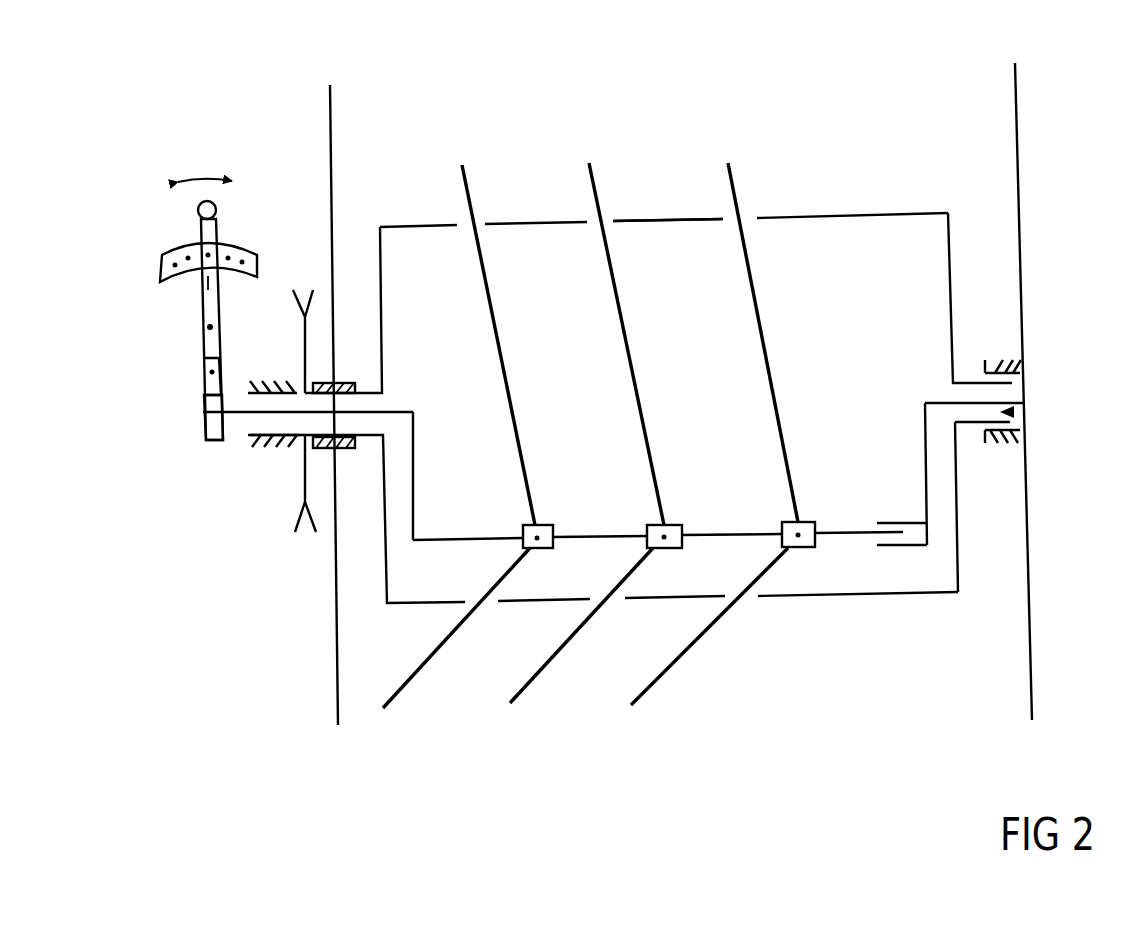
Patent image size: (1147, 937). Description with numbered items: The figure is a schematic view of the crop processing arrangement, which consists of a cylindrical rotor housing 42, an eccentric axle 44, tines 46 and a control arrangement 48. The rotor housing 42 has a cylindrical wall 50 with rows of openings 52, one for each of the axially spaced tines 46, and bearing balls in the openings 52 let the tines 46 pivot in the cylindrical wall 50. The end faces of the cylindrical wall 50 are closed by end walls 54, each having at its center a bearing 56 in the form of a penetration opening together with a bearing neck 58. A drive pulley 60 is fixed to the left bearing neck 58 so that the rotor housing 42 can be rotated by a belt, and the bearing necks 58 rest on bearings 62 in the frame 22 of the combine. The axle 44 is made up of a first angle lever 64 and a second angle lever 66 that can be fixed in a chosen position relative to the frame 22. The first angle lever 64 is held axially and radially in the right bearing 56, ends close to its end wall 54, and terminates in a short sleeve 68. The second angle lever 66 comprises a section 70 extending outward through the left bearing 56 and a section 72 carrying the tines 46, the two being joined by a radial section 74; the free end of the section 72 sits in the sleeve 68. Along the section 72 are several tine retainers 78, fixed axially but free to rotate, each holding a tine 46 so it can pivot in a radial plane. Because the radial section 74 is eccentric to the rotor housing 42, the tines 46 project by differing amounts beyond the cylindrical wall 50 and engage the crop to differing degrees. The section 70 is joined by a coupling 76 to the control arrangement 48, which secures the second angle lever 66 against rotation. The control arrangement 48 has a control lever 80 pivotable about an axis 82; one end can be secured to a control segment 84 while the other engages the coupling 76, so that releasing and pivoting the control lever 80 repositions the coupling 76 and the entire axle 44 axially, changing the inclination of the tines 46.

The frame 22 is at (330, 115).
The rotor housing 42 is at (822, 178).
The eccentric axle 44 is at (577, 539).
The tines 46 is at (630, 306).
The control arrangement 48 is at (140, 295).
The cylindrical wall 50 is at (677, 220).
The openings 52 is at (626, 338).
The end walls 54 is at (953, 278).
The bearing 56 is at (1013, 412).
The bearing neck 58 is at (297, 437).
The drive pulley 60 is at (293, 518).
The bearings 62 is at (333, 383).
The first angle lever 64 is at (933, 480).
The second angle lever 66 is at (463, 540).
The sleeve 68 is at (893, 545).
The section 70 is at (245, 425).
The section 72 is at (723, 538).
The radial section 74 is at (413, 495).
The coupling 76 is at (215, 428).
The tine retainers 78 is at (675, 517).
The control lever 80 is at (208, 283).
The axis 82 is at (205, 330).
The control segment 84 is at (163, 257).